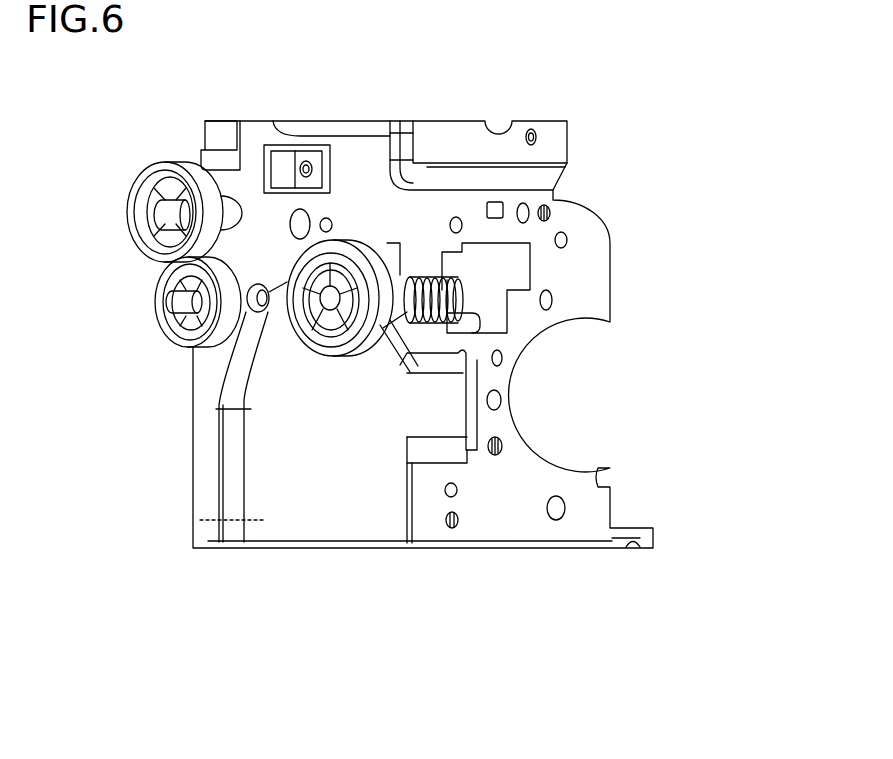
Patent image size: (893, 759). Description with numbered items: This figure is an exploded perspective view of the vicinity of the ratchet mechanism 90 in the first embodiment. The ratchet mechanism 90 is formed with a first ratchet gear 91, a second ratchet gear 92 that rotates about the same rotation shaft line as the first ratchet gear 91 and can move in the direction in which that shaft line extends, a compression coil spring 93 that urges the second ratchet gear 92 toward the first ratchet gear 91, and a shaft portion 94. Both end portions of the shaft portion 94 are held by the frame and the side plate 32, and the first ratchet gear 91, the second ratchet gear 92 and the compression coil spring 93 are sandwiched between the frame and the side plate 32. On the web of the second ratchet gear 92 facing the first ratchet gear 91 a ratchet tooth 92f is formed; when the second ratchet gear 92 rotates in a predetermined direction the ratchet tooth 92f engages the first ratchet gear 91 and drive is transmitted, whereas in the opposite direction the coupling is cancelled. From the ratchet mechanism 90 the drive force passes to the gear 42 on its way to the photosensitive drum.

The side plate 32 is at (364, 157).
The gear 42 is at (164, 167).
The ratchet mechanism 90 is at (272, 441).
The first ratchet gear 91 is at (215, 337).
The second ratchet gear 92 is at (237, 421).
The ratchet tooth 92f is at (300, 281).
The compression coil spring 93 is at (412, 318).
The shaft portion 94 is at (258, 312).